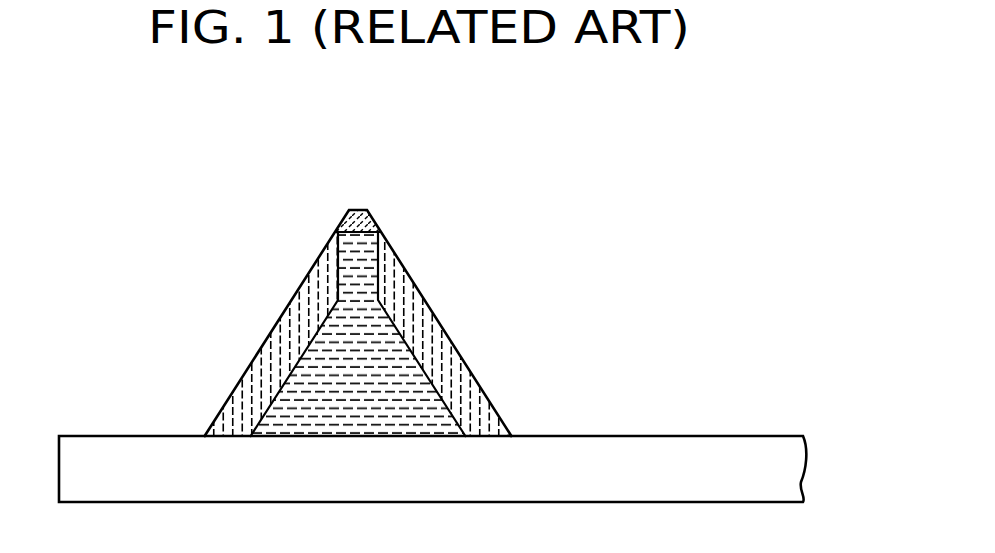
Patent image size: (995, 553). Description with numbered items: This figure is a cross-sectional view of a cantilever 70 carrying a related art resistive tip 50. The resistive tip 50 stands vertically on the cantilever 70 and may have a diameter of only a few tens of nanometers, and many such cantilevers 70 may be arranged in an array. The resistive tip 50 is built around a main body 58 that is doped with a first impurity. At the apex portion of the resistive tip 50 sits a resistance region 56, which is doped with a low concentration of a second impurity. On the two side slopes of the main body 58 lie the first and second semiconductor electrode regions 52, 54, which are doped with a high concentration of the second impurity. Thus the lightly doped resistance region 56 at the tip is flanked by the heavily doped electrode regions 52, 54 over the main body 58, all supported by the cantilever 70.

The resistive tip 50 is at (371, 286).
The first semiconductor electrode region 52 is at (268, 360).
The second semiconductor electrode region 54 is at (455, 348).
The resistance region 56 is at (357, 208).
The main body 58 is at (373, 398).
The cantilever 70 is at (692, 453).